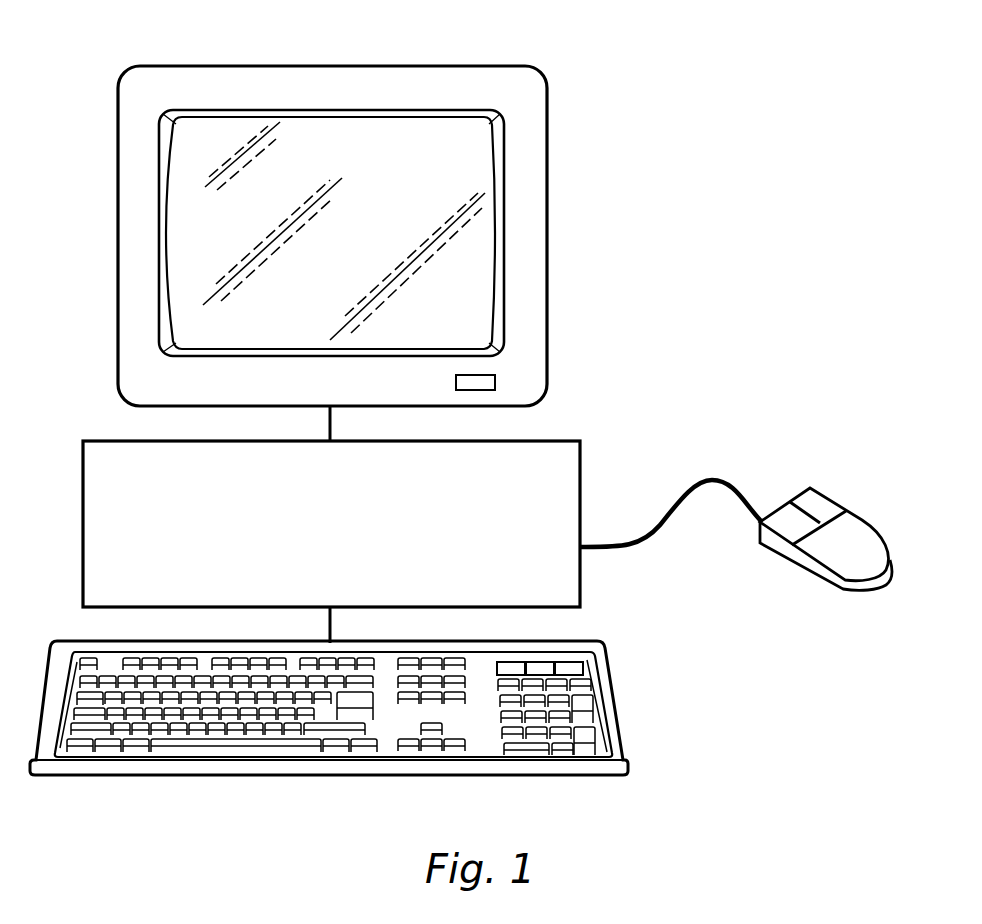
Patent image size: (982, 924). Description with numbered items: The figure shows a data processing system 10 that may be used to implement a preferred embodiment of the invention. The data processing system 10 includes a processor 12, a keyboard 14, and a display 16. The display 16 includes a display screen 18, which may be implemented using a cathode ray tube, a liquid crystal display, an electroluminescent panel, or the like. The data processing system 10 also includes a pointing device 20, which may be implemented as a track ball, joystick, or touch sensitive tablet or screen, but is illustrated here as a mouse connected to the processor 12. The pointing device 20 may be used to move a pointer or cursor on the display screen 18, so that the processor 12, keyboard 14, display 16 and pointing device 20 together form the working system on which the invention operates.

The data processing system 10 is at (698, 378).
The processor 12 is at (580, 483).
The keyboard 14 is at (610, 690).
The display 16 is at (354, 253).
The display screen 18 is at (490, 205).
The pointing device 20 is at (793, 557).